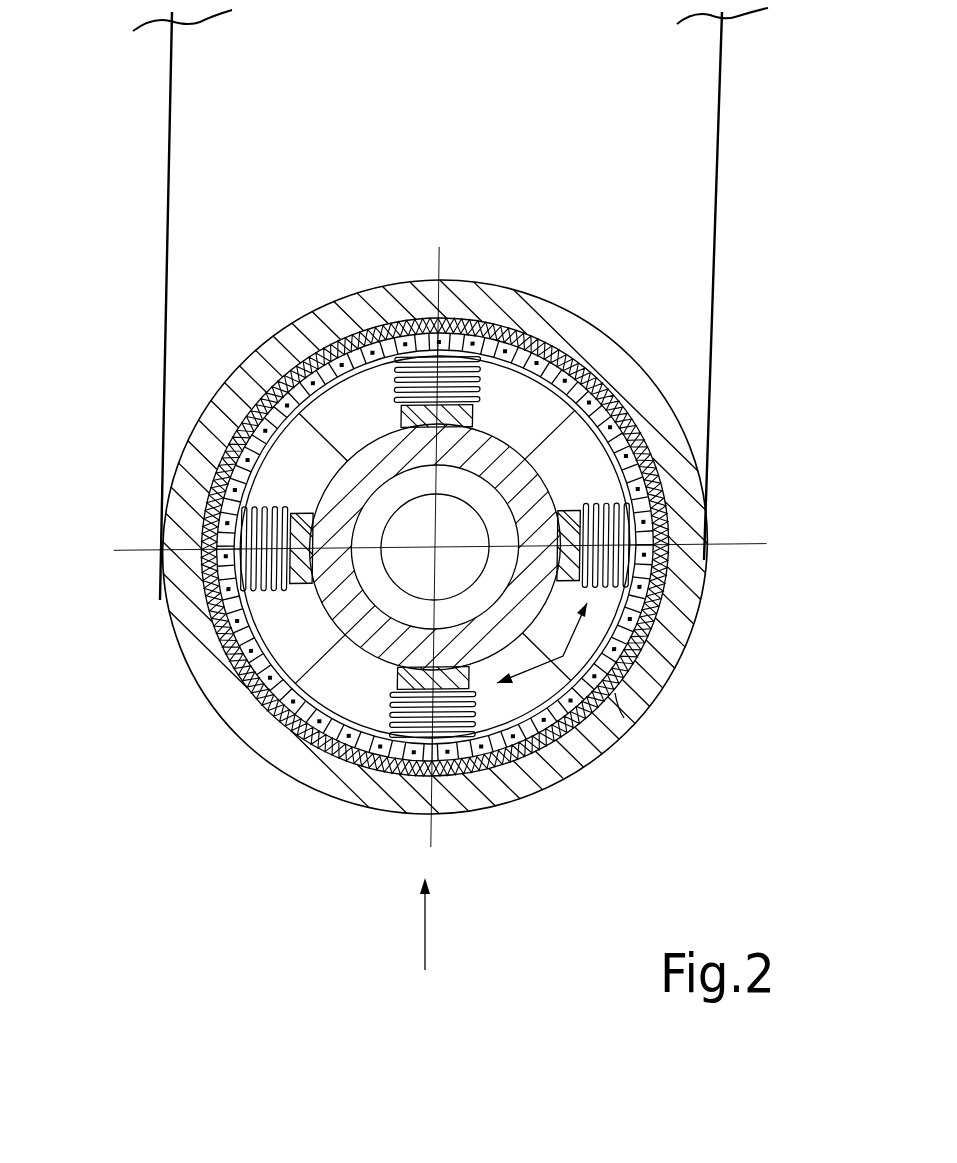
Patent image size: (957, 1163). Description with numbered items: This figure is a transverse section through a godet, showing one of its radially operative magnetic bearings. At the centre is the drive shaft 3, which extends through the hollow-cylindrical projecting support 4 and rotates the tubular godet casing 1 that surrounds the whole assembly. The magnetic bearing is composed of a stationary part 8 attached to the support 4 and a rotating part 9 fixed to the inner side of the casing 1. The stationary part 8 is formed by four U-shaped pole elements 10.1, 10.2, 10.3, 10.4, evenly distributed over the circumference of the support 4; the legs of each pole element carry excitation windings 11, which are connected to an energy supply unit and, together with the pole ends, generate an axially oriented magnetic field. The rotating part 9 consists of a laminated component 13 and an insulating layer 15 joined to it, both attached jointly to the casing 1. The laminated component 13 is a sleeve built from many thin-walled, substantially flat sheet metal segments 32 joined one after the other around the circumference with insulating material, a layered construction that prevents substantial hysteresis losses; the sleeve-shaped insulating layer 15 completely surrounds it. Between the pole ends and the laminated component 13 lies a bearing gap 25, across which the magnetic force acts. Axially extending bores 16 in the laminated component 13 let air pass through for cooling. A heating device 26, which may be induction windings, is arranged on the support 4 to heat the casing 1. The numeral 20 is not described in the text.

The tubular casing 1 is at (638, 385).
The drive shaft 3 is at (390, 660).
The projecting support 4 is at (323, 590).
The stationary part 8 is at (615, 693).
The rotating part 9 is at (530, 792).
The pole element 10.1 is at (563, 400).
The pole element 10.2 is at (692, 494).
The pole element 10.3 is at (318, 766).
The pole element 10.4 is at (210, 492).
The excitation windings 11 is at (353, 403).
The laminated component 13 is at (580, 700).
The insulating layer 15 is at (648, 653).
The axially extending bores 16 is at (472, 782).
The outer tube 20 is at (172, 92).
The bearing gap 25 is at (707, 521).
The heating device 26 is at (297, 335).
The sheet metal segments 32 is at (497, 413).